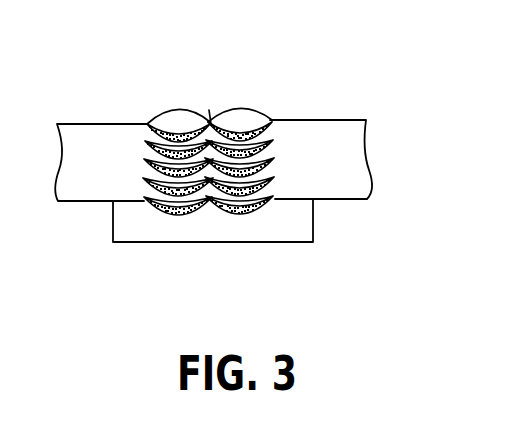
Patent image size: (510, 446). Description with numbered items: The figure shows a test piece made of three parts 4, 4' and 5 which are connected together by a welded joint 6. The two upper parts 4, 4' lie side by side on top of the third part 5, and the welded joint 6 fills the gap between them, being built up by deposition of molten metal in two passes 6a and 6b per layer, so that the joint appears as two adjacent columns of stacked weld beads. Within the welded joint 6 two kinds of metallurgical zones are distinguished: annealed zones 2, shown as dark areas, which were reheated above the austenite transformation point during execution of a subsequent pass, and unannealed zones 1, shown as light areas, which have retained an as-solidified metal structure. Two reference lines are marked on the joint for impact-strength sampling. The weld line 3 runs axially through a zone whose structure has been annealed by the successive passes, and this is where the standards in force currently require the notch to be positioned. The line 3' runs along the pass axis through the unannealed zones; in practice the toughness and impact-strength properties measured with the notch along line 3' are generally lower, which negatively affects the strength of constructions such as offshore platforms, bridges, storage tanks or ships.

The unannealed zone 1 is at (236, 122).
The annealed zone 2 is at (275, 151).
The weld line 3 is at (279, 177).
The line along the pass axis 3' is at (142, 166).
The part of the test piece 4 is at (96, 119).
The part of the test piece 4' is at (341, 120).
The part of the test piece 5 is at (290, 227).
The welded joint 6 is at (210, 98).
The weld pass 6a is at (175, 229).
The weld pass 6b is at (234, 229).